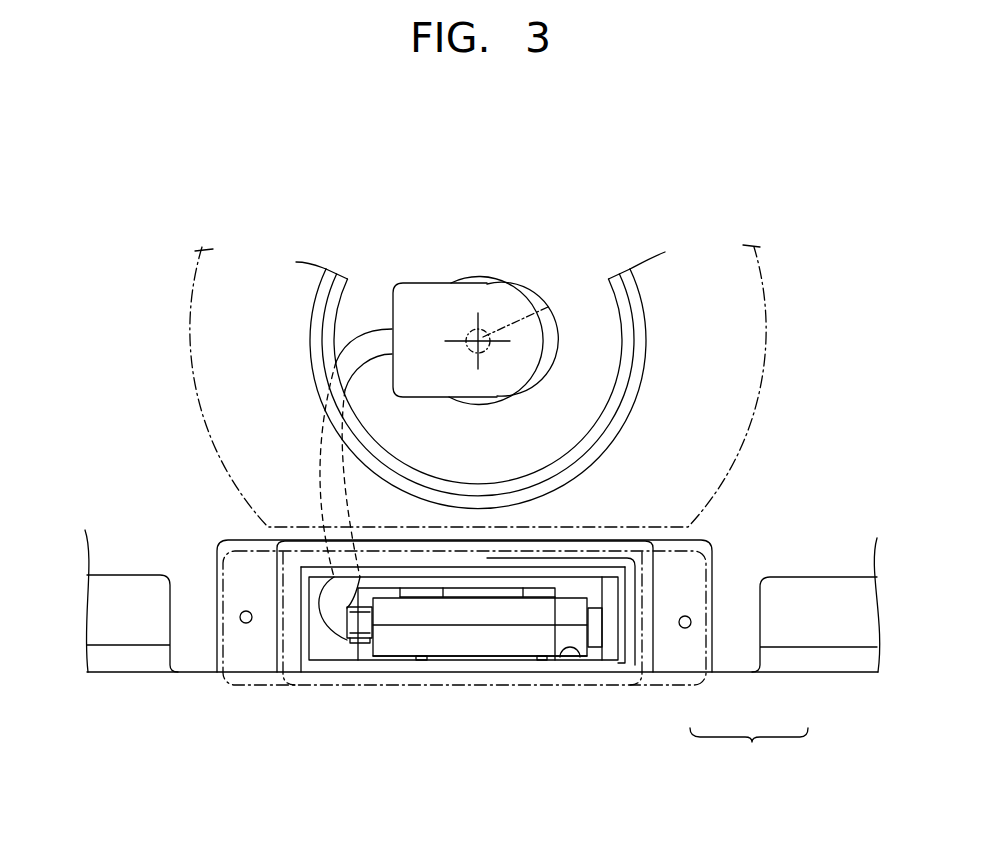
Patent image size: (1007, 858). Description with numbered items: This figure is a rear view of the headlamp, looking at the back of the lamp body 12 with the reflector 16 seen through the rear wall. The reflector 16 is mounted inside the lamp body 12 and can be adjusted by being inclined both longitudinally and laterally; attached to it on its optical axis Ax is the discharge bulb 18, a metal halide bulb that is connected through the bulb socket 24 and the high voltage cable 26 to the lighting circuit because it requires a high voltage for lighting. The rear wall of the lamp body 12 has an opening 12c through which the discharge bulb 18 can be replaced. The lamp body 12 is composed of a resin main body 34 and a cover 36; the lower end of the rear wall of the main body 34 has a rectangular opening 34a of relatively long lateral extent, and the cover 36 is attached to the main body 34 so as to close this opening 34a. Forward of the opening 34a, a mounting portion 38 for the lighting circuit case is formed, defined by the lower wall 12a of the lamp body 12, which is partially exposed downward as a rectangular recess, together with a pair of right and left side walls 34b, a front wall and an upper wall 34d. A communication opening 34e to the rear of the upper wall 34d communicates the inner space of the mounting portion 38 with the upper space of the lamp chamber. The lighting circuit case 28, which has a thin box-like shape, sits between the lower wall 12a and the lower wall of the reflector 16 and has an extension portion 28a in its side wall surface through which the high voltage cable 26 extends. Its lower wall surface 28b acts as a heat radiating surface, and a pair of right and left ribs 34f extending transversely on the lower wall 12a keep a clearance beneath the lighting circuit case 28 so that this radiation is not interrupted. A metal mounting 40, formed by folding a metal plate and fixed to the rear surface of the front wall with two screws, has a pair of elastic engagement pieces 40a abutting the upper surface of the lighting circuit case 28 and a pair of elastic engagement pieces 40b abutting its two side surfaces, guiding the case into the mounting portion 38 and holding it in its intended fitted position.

The lamp body 12 is at (542, 653).
The lower wall of the lamp body 12a is at (321, 672).
The opening 12c is at (592, 433).
The reflector 16 is at (772, 324).
The discharge bulb 18 is at (470, 356).
The bulb socket 24 is at (446, 283).
The high voltage cable 26 is at (360, 338).
The lighting circuit case 28 is at (400, 659).
The extension portion 28a is at (348, 644).
The lower wall surface 28b is at (491, 657).
The main body 34 is at (772, 682).
The opening 34a is at (573, 660).
The side walls 34b is at (305, 628).
The upper wall 34d is at (492, 570).
The communication opening 34e is at (463, 618).
The ribs 34f is at (423, 662).
The cover 36 is at (678, 692).
The mounting portion for the lighting circuit case 38 is at (180, 691).
The metal mounting 40 is at (565, 577).
The elastic engagement pieces 40a is at (422, 590).
The elastic engagement pieces 40b is at (600, 620).
The optical axis Ax is at (534, 316).